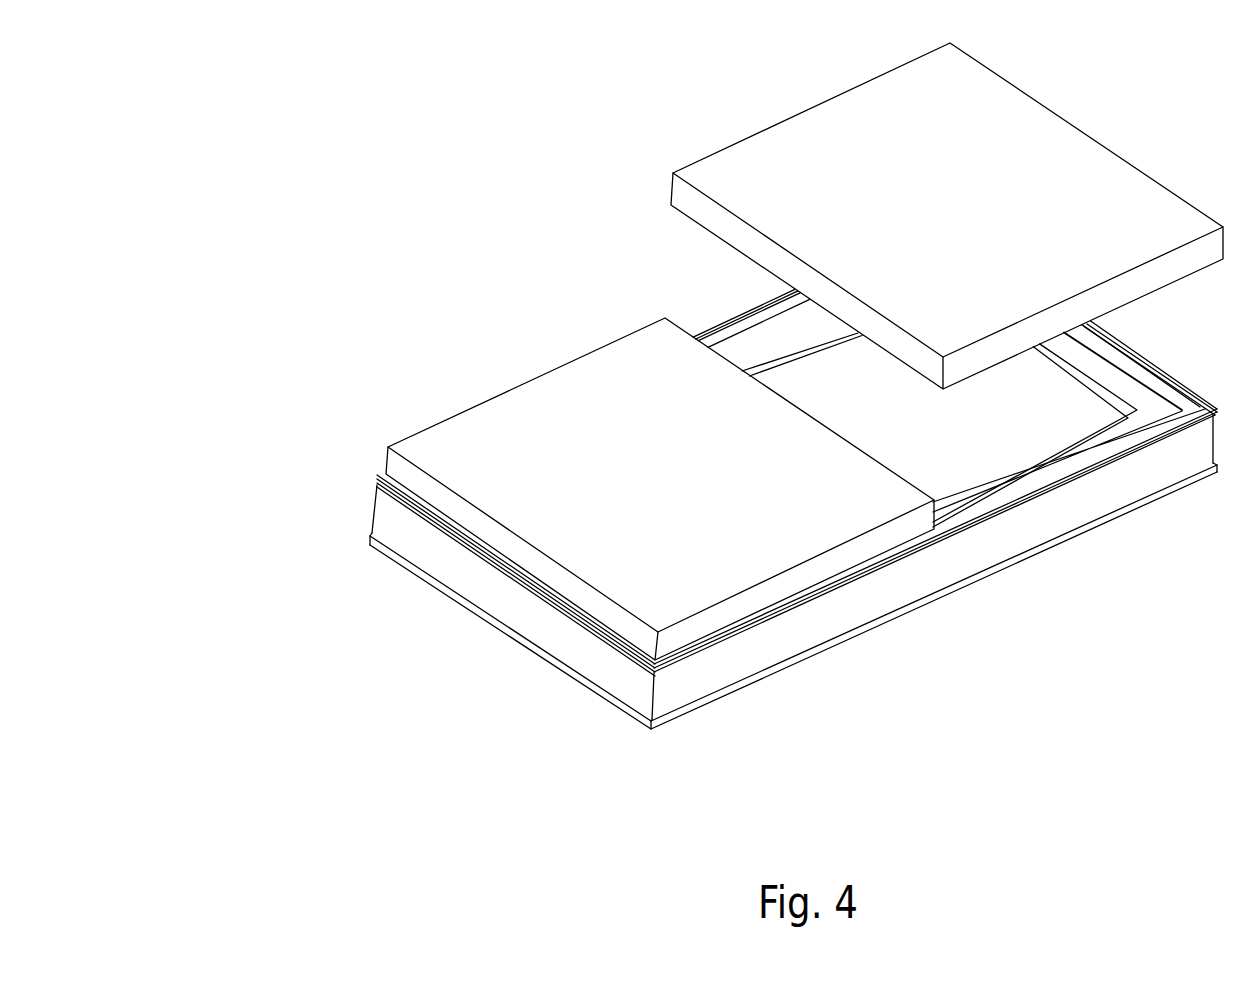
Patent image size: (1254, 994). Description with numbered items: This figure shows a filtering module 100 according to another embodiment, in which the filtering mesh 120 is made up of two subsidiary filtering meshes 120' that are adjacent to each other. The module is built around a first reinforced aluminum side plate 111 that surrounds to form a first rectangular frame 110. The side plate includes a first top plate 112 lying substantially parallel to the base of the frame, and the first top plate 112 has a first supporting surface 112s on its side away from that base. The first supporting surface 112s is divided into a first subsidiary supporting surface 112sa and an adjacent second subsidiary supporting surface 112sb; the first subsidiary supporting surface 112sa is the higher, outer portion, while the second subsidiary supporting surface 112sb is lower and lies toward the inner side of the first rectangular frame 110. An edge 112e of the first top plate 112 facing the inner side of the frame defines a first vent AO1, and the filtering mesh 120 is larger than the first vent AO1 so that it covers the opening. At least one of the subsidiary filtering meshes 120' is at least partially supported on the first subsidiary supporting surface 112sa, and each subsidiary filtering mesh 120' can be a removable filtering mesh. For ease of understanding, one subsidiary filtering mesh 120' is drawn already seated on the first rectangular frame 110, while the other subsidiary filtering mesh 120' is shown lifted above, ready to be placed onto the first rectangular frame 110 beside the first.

The filtering module 100 is at (243, 51).
The first rectangular frame 110 is at (450, 674).
The first reinforced aluminum side plate 111 is at (902, 597).
The first top plate 112 is at (1173, 401).
The edge 112e is at (1110, 376).
The first supporting surface 112s is at (1240, 594).
The first subsidiary supporting surface 112sa is at (1085, 458).
The second subsidiary supporting surface 112sb is at (1133, 427).
The filtering mesh 120 is at (804, 351).
The subsidiary filtering mesh 120' is at (804, 351).
The first vent AO1 is at (977, 490).